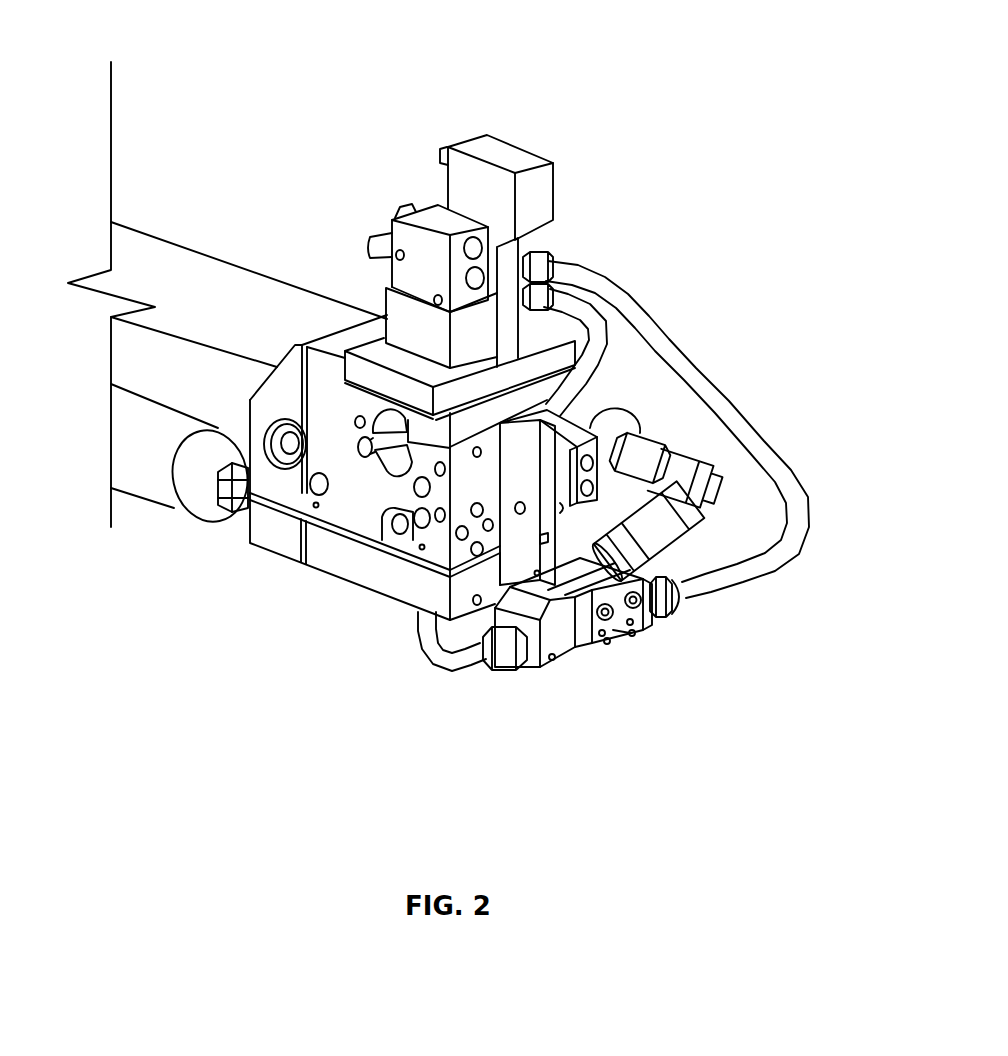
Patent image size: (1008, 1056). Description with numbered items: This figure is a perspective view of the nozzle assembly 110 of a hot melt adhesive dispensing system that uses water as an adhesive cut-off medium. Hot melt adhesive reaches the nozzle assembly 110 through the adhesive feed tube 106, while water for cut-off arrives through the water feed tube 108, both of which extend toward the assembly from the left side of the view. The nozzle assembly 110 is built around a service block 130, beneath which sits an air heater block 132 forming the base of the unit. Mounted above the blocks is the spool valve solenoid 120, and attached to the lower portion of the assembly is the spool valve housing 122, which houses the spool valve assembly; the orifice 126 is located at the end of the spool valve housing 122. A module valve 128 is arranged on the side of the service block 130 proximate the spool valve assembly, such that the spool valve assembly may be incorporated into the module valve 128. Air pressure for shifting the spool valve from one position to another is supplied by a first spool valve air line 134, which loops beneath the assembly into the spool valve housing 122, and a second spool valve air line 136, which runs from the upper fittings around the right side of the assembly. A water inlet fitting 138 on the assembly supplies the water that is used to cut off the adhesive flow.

The adhesive feed tube 106 is at (167, 502).
The water feed tube 108 is at (270, 295).
The nozzle assembly 110 is at (690, 134).
The spool valve solenoid 120 is at (507, 156).
The spool valve housing 122 is at (568, 655).
The orifice 126 is at (642, 637).
The module valve 128 is at (590, 409).
The service block 130 is at (347, 493).
The air heater block 132 is at (375, 570).
The first spool valve air line 134 is at (460, 667).
The second spool valve air line 136 is at (587, 278).
The water inlet fitting 138 is at (663, 540).